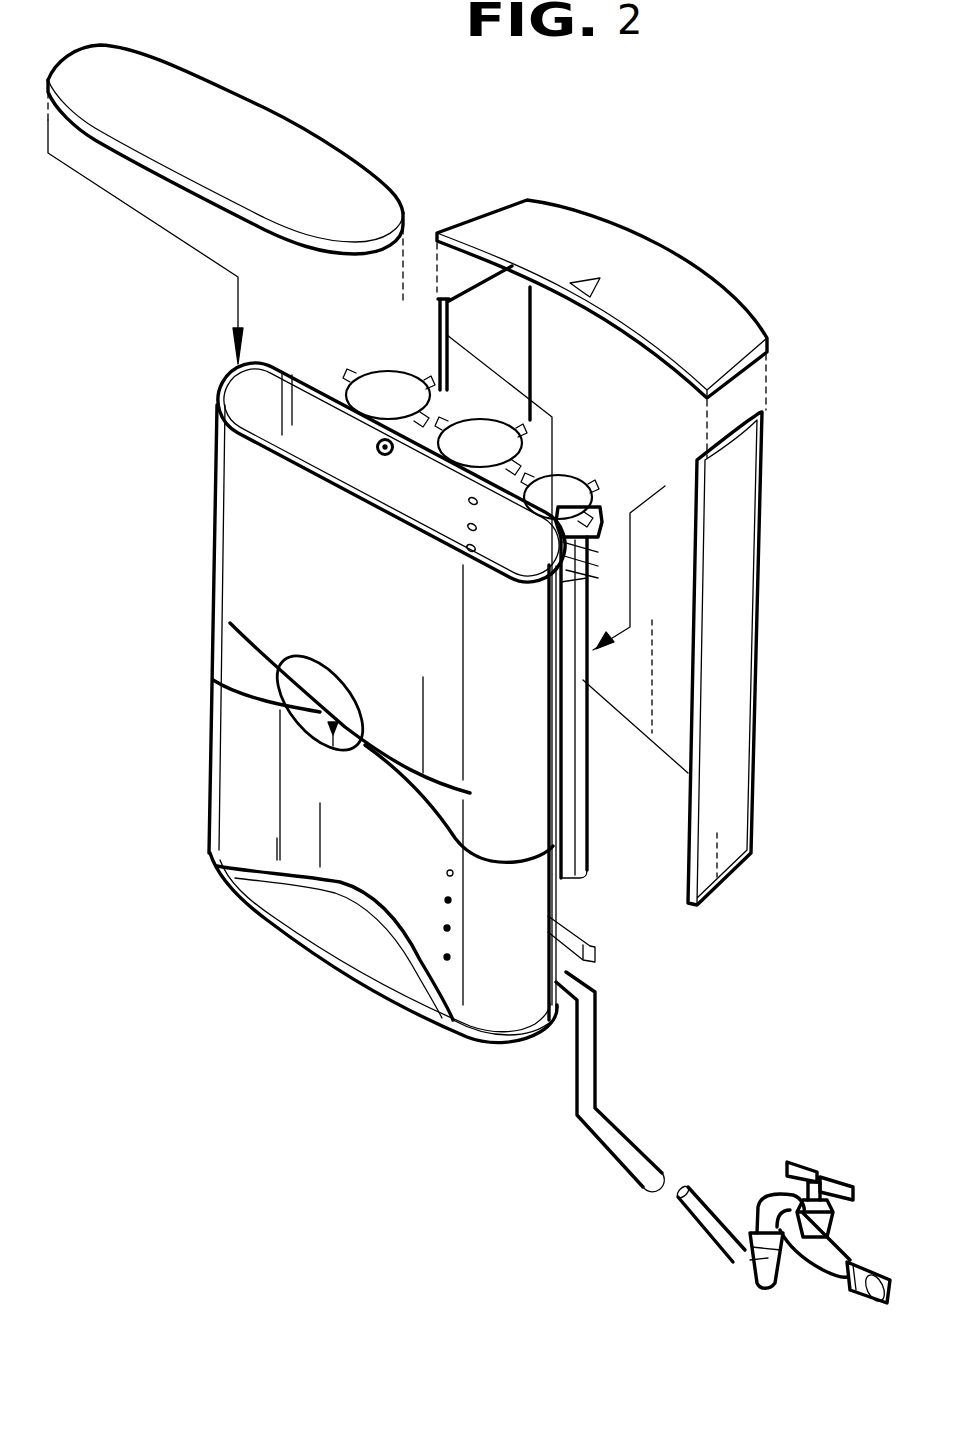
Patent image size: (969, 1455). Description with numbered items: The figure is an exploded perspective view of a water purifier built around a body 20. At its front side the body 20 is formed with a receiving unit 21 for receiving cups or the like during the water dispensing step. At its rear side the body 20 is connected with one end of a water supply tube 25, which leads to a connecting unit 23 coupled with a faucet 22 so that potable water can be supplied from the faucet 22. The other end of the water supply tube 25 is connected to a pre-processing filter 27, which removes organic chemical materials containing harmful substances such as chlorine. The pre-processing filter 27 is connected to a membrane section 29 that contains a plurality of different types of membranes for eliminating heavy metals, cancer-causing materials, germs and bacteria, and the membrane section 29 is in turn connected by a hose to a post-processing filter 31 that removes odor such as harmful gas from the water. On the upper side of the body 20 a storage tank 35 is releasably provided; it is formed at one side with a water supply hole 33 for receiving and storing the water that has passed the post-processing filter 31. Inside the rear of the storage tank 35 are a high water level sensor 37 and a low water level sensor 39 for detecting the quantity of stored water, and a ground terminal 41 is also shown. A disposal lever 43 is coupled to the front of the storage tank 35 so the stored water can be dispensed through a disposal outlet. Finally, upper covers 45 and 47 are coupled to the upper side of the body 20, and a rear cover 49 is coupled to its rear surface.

The body 20 is at (516, 1057).
The receiving unit 21 is at (242, 890).
The faucet 22 is at (822, 1264).
The connecting unit 23 is at (742, 1266).
The water supply tube 25 is at (610, 1143).
The pre-processing filter 27 is at (565, 882).
The membrane section 29 is at (465, 430).
The post-processing filter 31 is at (368, 380).
The water supply hole 33 is at (376, 444).
The storage tank 35 is at (236, 534).
The high water level sensor 37 is at (468, 503).
The low water level sensor 39 is at (467, 530).
The ground terminal 41 is at (467, 553).
The disposal lever 43 is at (310, 722).
The upper cover 45 is at (308, 152).
The upper cover 47 is at (692, 270).
The rear cover 49 is at (742, 512).